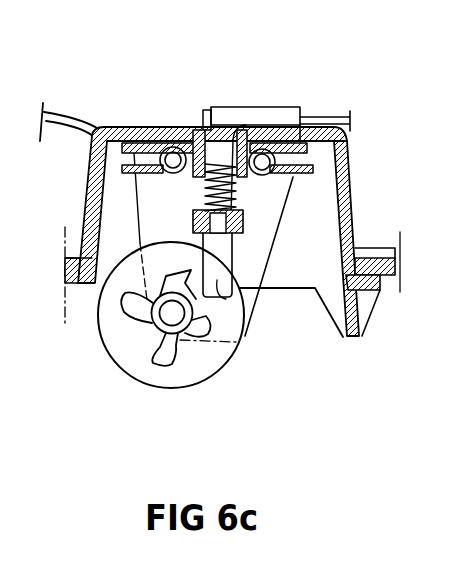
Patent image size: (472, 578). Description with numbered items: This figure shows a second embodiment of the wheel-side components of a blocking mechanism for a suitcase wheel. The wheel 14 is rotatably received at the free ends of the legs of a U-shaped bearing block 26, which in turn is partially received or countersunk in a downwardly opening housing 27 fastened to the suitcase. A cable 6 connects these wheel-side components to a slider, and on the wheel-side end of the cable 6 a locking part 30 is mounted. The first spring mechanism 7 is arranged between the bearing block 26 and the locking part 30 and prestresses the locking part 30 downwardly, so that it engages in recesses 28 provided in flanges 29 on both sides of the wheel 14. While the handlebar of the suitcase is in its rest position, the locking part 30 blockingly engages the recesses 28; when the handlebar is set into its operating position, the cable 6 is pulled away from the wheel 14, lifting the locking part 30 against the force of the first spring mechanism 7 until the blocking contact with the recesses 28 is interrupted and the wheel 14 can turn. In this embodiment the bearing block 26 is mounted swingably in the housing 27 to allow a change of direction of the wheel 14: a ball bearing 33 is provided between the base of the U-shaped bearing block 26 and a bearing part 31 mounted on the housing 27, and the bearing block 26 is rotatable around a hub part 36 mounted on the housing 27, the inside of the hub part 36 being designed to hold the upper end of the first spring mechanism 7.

The cable 6 is at (248, 108).
The first spring mechanism 7 is at (203, 186).
The wheel 14 is at (113, 337).
The bearing block 26 is at (268, 219).
The housing 27 is at (350, 178).
The recesses 28 is at (194, 333).
The flanges 29 is at (162, 357).
The locking part 30 is at (228, 287).
The bearing part 31 is at (303, 139).
The ball bearing 33 is at (278, 108).
The hub part 36 is at (199, 124).